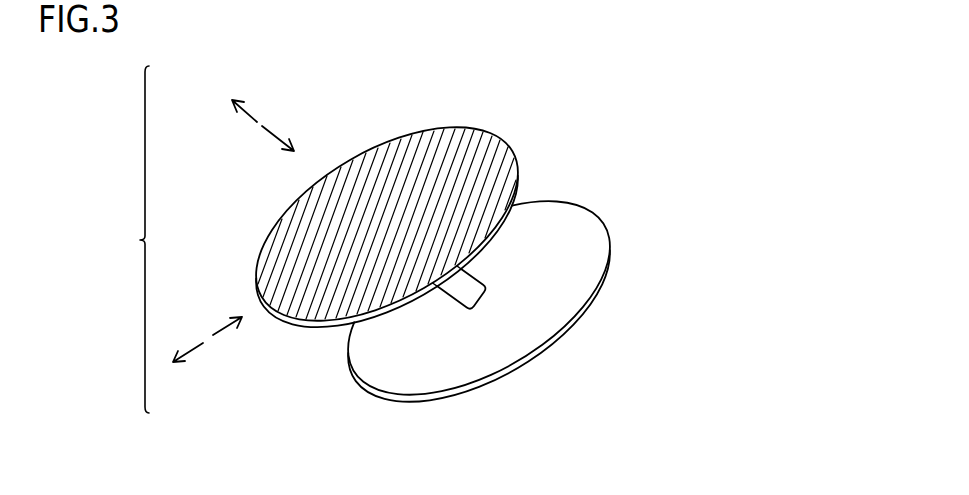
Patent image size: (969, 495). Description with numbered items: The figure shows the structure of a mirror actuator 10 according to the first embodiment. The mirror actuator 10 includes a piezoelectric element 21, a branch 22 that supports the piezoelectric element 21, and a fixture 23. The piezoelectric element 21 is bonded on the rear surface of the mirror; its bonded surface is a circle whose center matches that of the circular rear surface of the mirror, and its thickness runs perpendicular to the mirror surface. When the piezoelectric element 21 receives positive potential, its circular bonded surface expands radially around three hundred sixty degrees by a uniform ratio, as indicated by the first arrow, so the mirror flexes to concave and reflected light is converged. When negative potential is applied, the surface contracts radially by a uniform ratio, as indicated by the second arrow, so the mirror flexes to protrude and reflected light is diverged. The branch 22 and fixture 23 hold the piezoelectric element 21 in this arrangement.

The mirror actuator 10 is at (213, 239).
The piezoelectric element 21 is at (452, 153).
The branch 22 is at (475, 297).
The fixture 23 is at (552, 228).